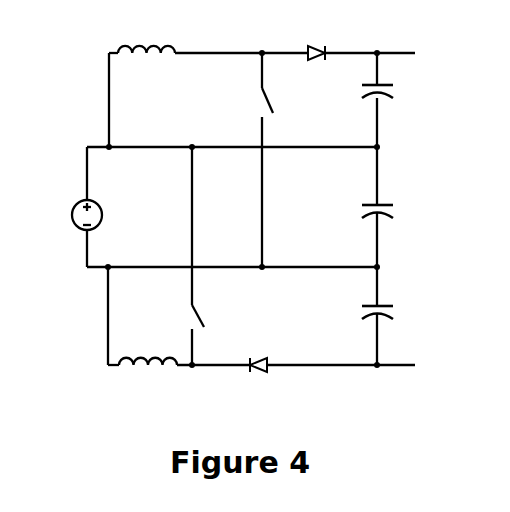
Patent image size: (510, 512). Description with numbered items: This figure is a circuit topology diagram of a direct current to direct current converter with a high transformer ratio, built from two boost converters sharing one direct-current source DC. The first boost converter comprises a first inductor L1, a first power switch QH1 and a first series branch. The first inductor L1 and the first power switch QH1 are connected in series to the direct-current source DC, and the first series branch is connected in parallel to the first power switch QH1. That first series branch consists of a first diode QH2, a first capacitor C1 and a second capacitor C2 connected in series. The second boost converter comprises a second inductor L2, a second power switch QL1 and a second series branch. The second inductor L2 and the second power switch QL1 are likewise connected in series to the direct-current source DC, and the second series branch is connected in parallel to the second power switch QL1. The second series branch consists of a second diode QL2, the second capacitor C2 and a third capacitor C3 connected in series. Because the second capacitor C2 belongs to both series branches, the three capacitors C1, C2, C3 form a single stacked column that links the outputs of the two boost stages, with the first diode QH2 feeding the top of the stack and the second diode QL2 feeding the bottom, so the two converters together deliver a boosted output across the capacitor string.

The first inductor L1 is at (146, 38).
The second inductor L2 is at (148, 378).
The first power switch QH1 is at (249, 160).
The first diode QH2 is at (310, 39).
The second power switch QL1 is at (181, 256).
The second diode QL2 is at (259, 381).
The first capacitor C1 is at (365, 88).
The second capacitor C2 is at (365, 212).
The third capacitor C3 is at (365, 312).
The direct-current source DC is at (68, 215).